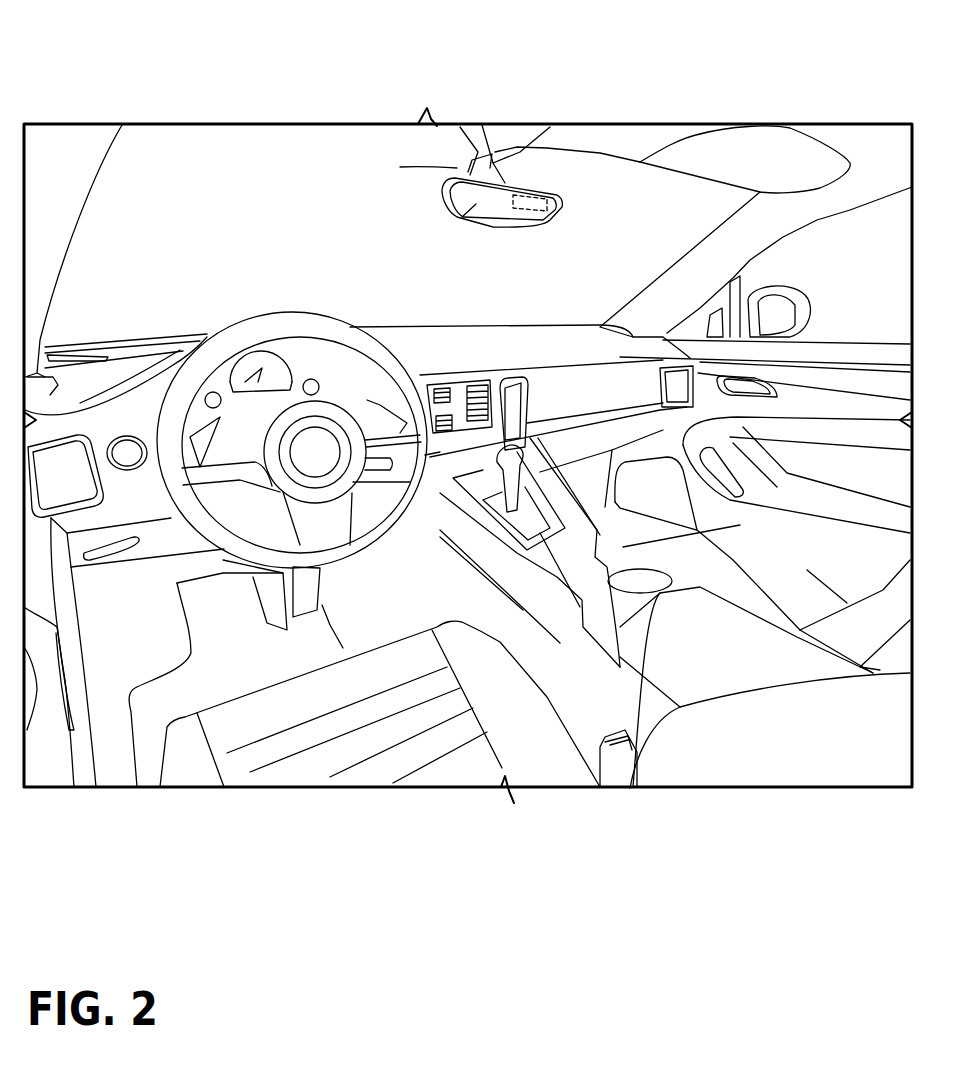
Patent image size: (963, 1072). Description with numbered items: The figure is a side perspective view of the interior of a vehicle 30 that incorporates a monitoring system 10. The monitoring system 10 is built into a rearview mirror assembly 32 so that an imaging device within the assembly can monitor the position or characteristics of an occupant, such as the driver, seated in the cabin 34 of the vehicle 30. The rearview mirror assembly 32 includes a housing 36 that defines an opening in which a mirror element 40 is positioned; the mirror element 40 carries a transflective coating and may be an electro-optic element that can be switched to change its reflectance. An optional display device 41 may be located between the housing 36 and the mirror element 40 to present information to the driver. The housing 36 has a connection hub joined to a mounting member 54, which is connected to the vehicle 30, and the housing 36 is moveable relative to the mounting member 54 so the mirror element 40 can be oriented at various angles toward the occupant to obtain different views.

The vehicle 30 is at (738, 80).
The monitoring system 10 is at (457, 210).
The mounting member 54 is at (473, 170).
The rearview mirror assembly 32 is at (552, 221).
The housing 36 is at (487, 229).
The mirror element 40 is at (460, 220).
The display device 41 is at (555, 203).
The cabin 34 is at (712, 650).